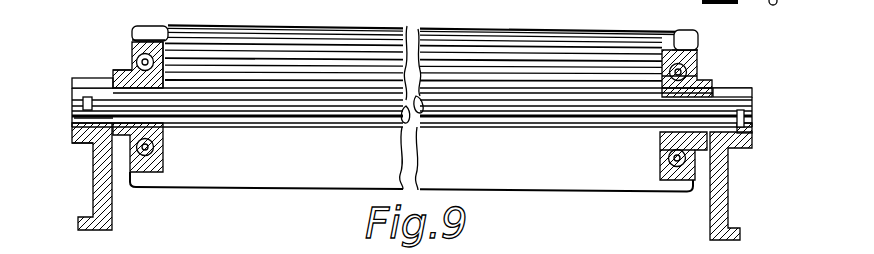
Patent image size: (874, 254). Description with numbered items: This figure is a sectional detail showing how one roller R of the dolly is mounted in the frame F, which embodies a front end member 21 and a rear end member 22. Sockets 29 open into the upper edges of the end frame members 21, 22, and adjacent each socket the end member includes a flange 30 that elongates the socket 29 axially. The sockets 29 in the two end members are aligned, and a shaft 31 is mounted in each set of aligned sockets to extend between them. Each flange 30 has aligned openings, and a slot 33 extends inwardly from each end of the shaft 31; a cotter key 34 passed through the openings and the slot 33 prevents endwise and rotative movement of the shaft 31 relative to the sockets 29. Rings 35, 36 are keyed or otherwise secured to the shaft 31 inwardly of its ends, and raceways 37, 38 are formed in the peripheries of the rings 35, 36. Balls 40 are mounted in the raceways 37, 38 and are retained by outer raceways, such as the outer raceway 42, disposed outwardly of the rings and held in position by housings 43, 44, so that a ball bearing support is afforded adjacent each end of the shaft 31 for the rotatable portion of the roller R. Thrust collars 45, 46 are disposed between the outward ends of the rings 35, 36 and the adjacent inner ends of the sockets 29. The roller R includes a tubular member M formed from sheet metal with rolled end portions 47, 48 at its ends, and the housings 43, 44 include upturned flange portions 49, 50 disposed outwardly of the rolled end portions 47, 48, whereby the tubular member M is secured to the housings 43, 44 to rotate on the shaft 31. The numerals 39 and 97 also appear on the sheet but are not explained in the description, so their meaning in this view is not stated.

The front end member 21 is at (95, 186).
The rear end member 22 is at (730, 184).
The socket 29 is at (80, 78).
The flange 30 is at (75, 140).
The shaft 31 is at (476, 122).
The slot 33 is at (80, 115).
The cotter key 34 is at (80, 103).
The ring 35 is at (165, 80).
The ring 36 is at (662, 78).
The raceway 37 is at (127, 65).
The raceway 38 is at (662, 88).
The fragment from adjacent figure 39 is at (670, 5).
The ball 40 is at (153, 55).
The outer raceway 42 is at (662, 170).
The housing 43 is at (165, 62).
The housing 44 is at (668, 160).
The thrust collar 45 is at (115, 72).
The thrust collar 46 is at (708, 80).
The rolled end portion 47 is at (138, 30).
The rolled end portion 48 is at (686, 36).
The upturned flange portion 49 is at (140, 40).
The upturned flange portion 50 is at (696, 50).
The fragment from adjacent figure 97 is at (33, 6).
The tubular member M is at (346, 27).
The roller R is at (481, 24).
The frame F is at (733, 88).